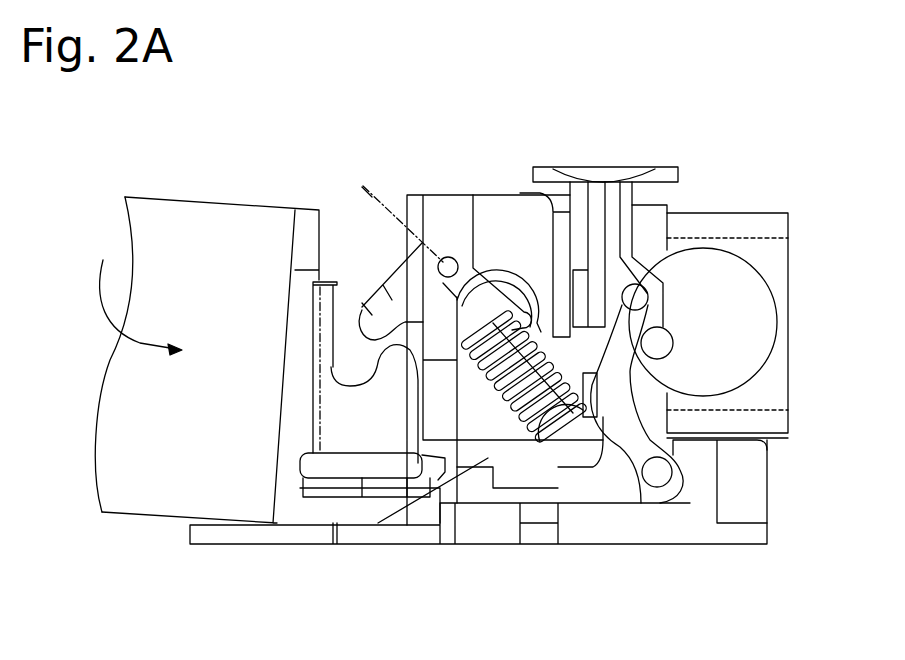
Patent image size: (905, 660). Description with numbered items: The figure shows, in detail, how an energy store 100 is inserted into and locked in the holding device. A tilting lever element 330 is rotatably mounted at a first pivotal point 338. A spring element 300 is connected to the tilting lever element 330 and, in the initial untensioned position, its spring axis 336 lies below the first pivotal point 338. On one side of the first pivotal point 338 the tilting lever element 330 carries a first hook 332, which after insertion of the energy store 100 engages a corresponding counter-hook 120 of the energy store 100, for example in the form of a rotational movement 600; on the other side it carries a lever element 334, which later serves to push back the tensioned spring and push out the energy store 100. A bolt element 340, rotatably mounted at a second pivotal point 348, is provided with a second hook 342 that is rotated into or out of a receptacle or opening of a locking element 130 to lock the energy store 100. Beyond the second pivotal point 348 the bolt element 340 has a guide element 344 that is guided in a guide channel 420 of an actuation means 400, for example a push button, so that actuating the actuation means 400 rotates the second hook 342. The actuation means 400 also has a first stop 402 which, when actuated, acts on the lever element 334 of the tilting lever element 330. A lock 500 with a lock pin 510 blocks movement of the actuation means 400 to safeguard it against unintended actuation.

The energy store 100 is at (206, 188).
The counter-hook 120 is at (373, 417).
The locking element 130 is at (393, 500).
The spring element 300 is at (506, 428).
The tilting lever element 330 is at (393, 305).
The first hook 332 is at (362, 310).
The lever element 334 is at (527, 313).
The spring axis 336 is at (366, 185).
The first pivotal point 338 is at (450, 257).
The bolt element 340 is at (620, 487).
The second hook 342 is at (473, 487).
The guide element 344 is at (640, 292).
The second pivotal point 348 is at (659, 476).
The actuation means 400 is at (660, 152).
The first stop 402 is at (540, 193).
The guide channel 420 is at (603, 210).
The lock 500 is at (781, 462).
The lock pin 510 is at (657, 343).
The rotational movement 600 is at (97, 405).